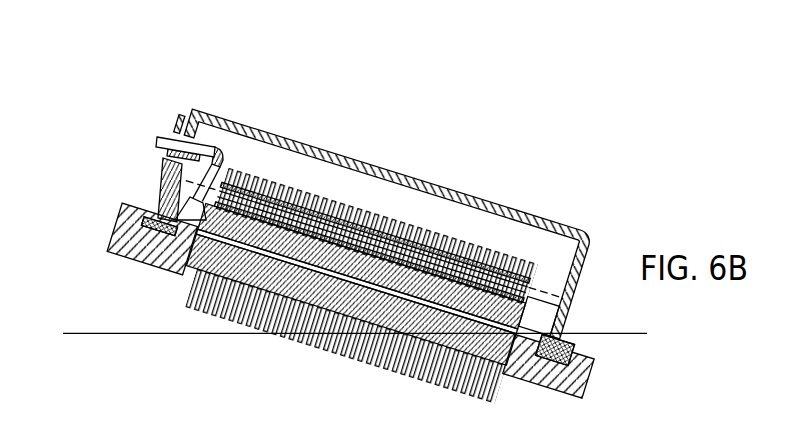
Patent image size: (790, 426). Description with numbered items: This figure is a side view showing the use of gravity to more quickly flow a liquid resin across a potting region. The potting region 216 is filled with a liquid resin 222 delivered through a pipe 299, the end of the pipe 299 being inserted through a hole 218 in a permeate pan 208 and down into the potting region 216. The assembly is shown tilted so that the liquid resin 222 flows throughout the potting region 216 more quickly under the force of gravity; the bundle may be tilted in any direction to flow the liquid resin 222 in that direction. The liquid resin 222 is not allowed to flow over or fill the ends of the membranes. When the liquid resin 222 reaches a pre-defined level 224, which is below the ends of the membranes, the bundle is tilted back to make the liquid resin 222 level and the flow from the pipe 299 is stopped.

The permeate pan 208 is at (250, 127).
The hole 218 is at (193, 113).
The pipe 299 is at (156, 137).
The potting region 216 is at (289, 182).
The liquid resin 222 is at (200, 232).
The pre-defined level 224 is at (543, 290).